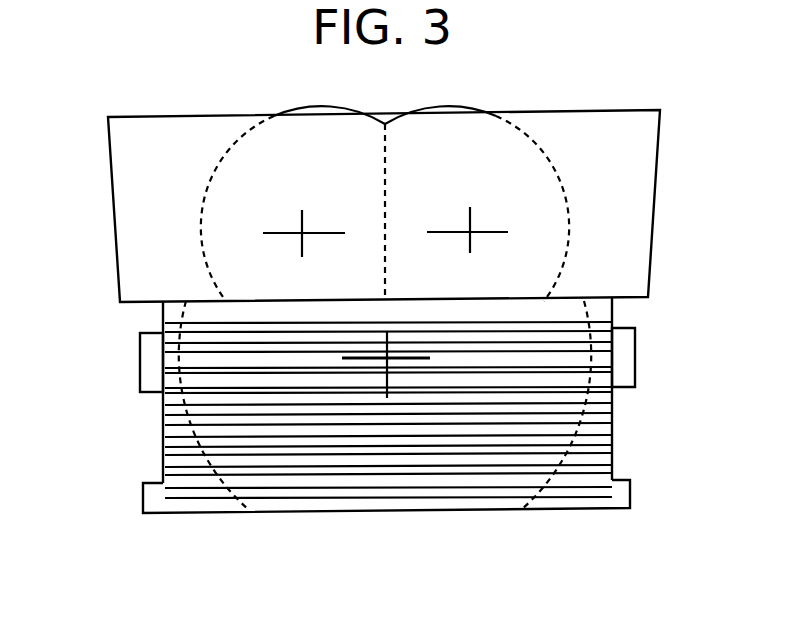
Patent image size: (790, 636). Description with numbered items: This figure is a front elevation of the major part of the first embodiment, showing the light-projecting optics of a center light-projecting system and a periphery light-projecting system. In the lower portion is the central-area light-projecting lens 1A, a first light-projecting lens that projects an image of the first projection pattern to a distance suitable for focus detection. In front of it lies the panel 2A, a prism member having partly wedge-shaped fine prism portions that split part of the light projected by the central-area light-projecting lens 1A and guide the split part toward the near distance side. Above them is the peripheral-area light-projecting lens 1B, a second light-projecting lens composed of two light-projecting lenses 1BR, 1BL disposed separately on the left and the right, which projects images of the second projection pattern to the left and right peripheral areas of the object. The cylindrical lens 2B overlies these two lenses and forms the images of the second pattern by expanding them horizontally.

The central-area light-projecting lens 1A is at (390, 438).
The peripheral-area light-projecting lens 1B is at (400, 177).
The light-projecting lens 1BR is at (293, 158).
The light-projecting lens 1BL is at (502, 152).
The panel 2A is at (163, 401).
The cylindrical lens 2B is at (108, 152).